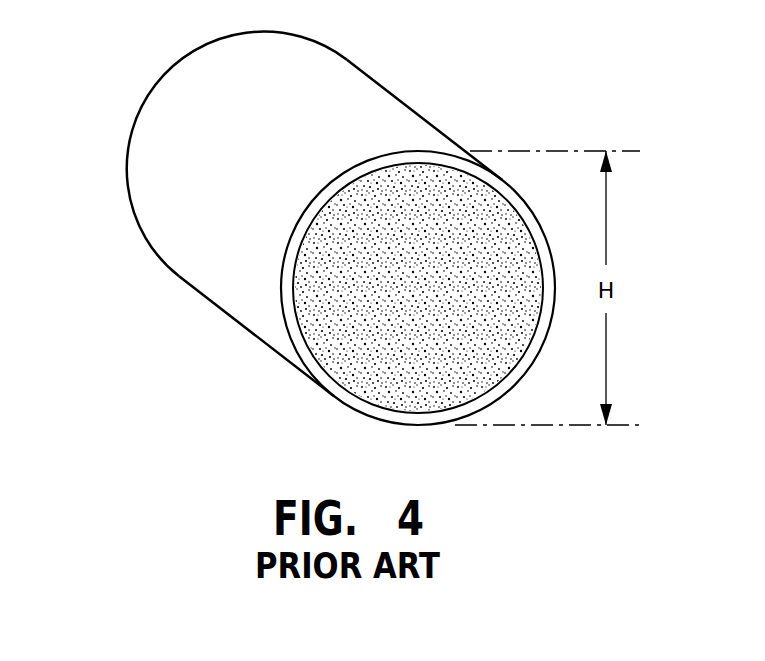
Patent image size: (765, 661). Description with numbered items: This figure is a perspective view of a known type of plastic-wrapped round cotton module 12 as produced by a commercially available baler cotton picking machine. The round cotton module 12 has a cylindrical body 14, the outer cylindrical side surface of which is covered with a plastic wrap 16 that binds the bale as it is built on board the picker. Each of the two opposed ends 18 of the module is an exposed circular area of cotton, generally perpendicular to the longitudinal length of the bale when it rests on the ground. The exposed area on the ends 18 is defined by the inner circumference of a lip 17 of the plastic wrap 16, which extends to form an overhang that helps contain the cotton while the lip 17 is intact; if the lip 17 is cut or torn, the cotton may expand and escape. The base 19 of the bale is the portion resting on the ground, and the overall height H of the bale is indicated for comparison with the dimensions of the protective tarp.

The round cotton module 12 is at (280, 205).
The cylindrical body 14 is at (148, 194).
The plastic wrap 16 is at (405, 104).
The lip 17 is at (298, 341).
The exposed ends 18 is at (375, 343).
The base 19 is at (420, 425).